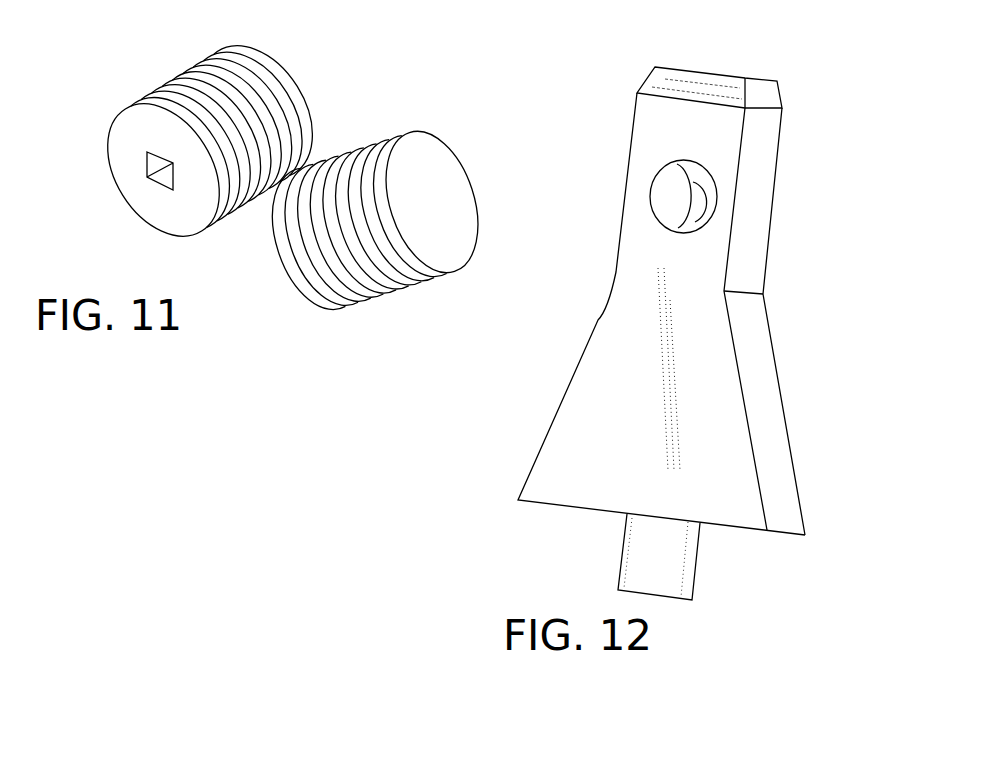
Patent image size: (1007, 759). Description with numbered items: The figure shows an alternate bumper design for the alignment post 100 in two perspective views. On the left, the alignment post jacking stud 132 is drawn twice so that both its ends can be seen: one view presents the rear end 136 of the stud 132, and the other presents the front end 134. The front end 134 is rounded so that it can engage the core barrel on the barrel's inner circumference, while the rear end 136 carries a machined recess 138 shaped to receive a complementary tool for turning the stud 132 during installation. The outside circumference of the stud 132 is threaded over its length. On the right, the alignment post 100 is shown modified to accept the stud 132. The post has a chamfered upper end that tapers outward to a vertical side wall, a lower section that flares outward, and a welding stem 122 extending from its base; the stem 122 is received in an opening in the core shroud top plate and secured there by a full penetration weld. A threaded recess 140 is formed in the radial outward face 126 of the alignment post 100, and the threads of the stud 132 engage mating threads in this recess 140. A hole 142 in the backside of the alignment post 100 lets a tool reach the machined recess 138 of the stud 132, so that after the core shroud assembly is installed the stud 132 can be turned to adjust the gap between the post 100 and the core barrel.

In FIG. 12, the alignment post 100 is at (650, 487).
In FIG. 12, the welding stem 122 is at (677, 567).
In FIG. 12, the radial outward face 126 is at (710, 370).
In FIG. 11, the jacking stud 132 is at (313, 67).
In FIG. 11, the front end 134 is at (437, 160).
In FIG. 11, the rear end 136 is at (120, 153).
In FIG. 11, the machined recess 138 is at (150, 177).
In FIG. 12, the recess 140 is at (663, 200).
In FIG. 12, the hole 142 is at (710, 200).